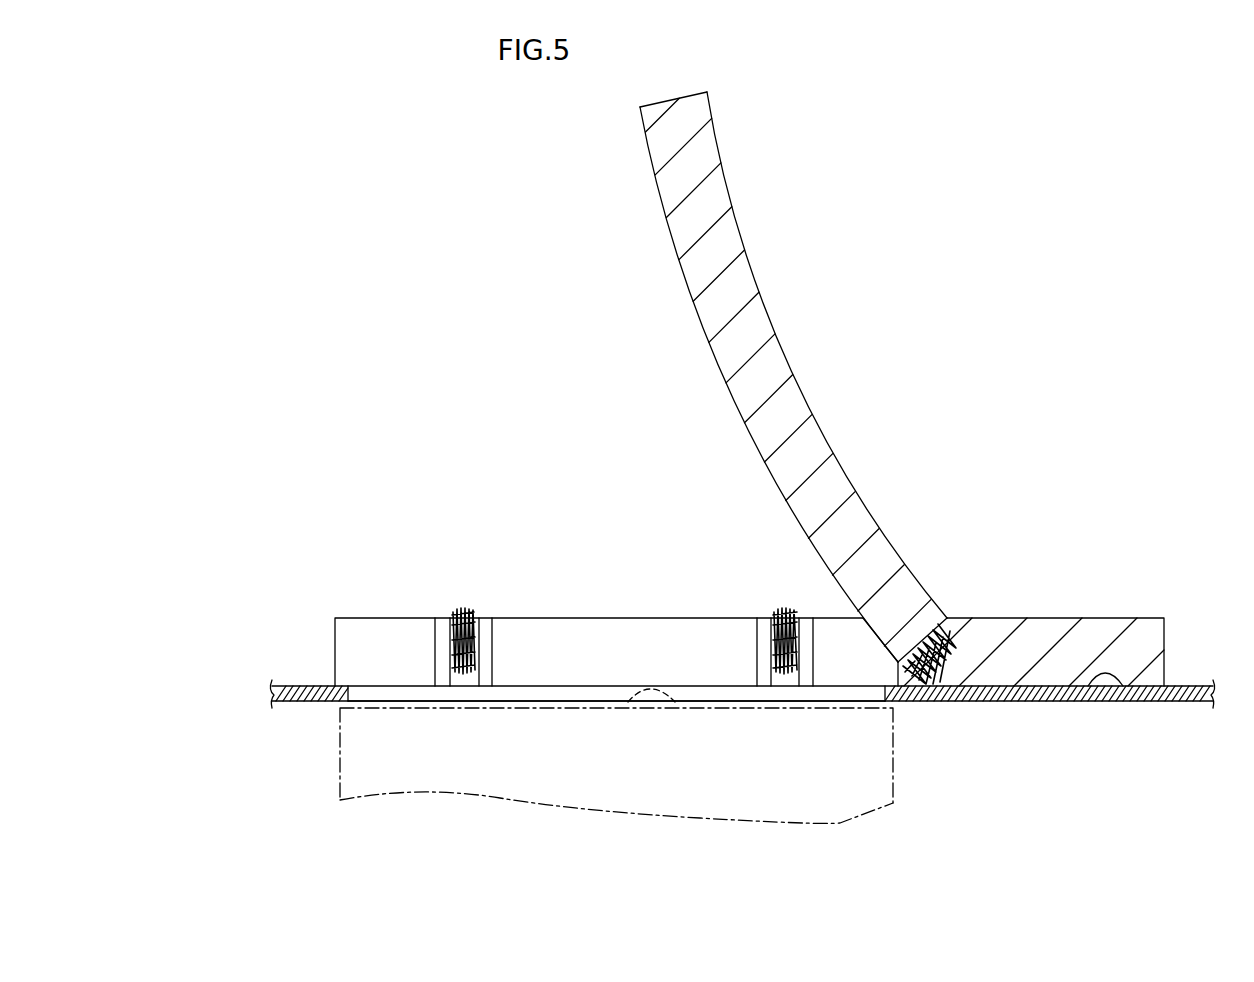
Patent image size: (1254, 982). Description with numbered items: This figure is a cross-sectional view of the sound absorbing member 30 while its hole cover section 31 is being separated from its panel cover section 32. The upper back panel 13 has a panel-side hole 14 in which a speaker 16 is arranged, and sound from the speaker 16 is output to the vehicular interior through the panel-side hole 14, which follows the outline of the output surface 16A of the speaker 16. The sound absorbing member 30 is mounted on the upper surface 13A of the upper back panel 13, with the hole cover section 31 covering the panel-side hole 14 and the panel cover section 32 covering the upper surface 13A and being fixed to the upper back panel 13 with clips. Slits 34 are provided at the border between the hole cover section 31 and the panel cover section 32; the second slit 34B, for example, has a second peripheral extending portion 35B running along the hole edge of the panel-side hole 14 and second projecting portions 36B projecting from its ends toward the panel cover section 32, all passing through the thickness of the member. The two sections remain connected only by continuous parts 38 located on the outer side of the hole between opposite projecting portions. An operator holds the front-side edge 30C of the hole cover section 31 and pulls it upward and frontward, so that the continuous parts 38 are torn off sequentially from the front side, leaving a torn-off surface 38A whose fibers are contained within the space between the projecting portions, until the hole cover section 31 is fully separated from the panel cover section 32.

The upper back panel 13 is at (1178, 701).
The upper surface 13A is at (1123, 686).
The panel-side hole 14 is at (885, 698).
The speaker 16 is at (340, 782).
The output surface 16A is at (675, 702).
The sound absorbing member 30 is at (1158, 536).
The front-side edge 30C is at (672, 108).
The hole cover section 31 is at (738, 283).
The panel cover section 32 is at (1062, 633).
The slits 34 is at (378, 632).
The second slit 34B is at (935, 512).
The second peripheral extending portion 35B is at (862, 660).
The second projecting portions 36B is at (912, 678).
The continuous part 38 is at (953, 617).
The torn-off surface 38A is at (463, 607).